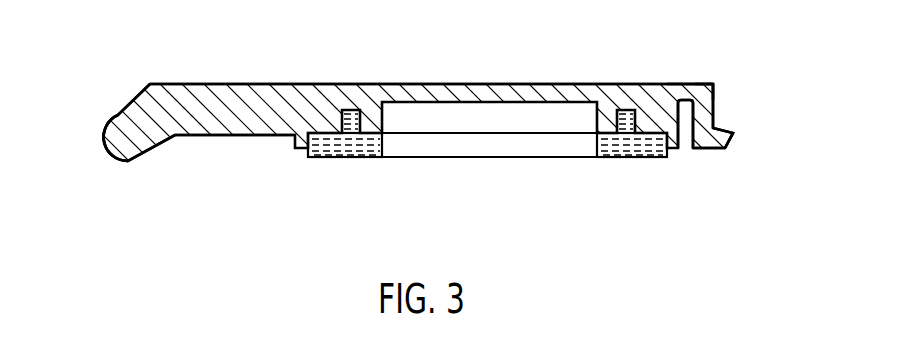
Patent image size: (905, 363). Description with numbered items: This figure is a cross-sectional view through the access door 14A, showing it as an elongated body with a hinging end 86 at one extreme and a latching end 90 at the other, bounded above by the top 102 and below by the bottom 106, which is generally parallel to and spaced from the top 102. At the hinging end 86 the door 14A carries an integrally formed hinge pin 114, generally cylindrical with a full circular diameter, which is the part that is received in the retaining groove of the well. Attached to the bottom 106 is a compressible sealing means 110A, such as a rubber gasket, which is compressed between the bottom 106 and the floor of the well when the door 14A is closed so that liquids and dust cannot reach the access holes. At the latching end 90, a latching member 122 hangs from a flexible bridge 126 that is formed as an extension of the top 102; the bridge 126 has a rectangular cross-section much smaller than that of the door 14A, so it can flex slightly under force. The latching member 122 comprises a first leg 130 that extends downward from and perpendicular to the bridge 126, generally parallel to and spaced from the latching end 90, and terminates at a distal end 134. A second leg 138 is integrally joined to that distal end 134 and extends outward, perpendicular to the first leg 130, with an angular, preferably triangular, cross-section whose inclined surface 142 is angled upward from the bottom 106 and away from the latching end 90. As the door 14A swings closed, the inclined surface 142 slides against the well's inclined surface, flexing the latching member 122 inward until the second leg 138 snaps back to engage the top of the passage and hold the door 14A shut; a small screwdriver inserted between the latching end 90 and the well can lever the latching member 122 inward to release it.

The door 14A is at (223, 84).
The hinging end 86 is at (113, 120).
The hinge pin 114 is at (97, 142).
The top 102 is at (380, 84).
The bottom 106 is at (223, 136).
The compressible sealing means 110A is at (347, 158).
The flexible bridge 126 is at (688, 125).
The first leg 130 is at (688, 84).
The latching end 90 is at (703, 84).
The latching member 122 is at (718, 93).
The distal end 134 is at (714, 118).
The inclined surface 142 is at (728, 147).
The second leg 138 is at (710, 150).